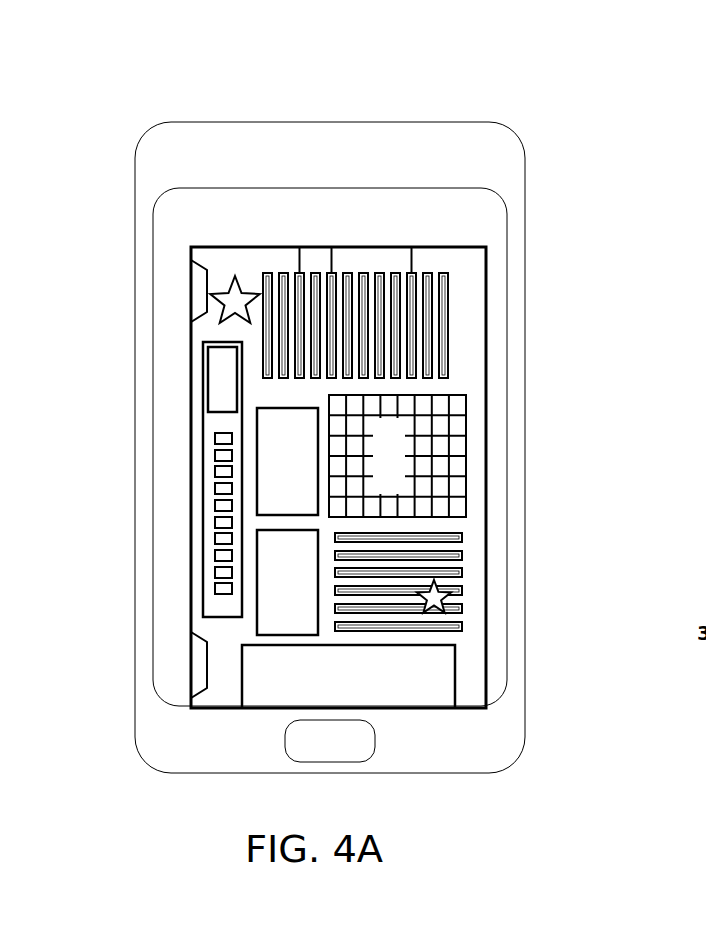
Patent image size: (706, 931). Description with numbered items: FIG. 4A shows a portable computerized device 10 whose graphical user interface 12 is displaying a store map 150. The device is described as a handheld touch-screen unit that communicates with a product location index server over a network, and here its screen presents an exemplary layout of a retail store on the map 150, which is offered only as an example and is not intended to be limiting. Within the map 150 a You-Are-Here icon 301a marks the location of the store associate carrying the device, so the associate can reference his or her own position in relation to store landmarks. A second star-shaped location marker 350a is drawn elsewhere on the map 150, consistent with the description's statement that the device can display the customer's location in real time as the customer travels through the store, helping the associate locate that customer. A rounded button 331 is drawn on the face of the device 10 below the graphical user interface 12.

The portable computerized device 10 is at (352, 122).
The graphical user interface 12 is at (455, 214).
The map 150 is at (450, 327).
The You-Are-Here icon 301a is at (226, 308).
The item location indicator 350a is at (448, 591).
The home button 331 is at (348, 762).